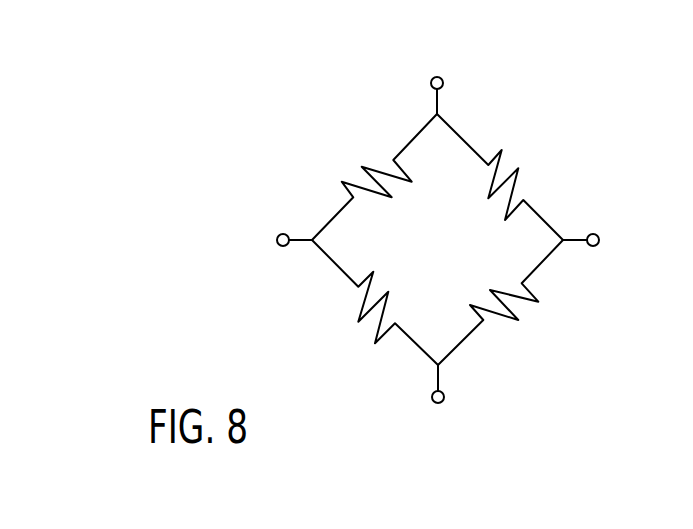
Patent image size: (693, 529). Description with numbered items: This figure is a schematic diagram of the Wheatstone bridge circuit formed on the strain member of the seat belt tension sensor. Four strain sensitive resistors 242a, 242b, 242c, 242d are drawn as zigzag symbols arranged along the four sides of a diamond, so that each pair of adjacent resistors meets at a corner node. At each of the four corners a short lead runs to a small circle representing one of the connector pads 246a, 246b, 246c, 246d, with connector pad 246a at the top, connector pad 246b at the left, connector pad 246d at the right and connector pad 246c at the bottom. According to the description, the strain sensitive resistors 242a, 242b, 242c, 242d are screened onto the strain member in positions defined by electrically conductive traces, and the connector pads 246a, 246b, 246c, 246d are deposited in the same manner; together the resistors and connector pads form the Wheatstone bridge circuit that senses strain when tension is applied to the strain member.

The strain sensitive resistor 242a is at (368, 177).
The strain sensitive resistor 242b is at (369, 302).
The strain sensitive resistor 242c is at (507, 177).
The strain sensitive resistor 242d is at (509, 302).
The connector pad 246a is at (437, 77).
The connector pad 246b is at (277, 240).
The connector pad 246c is at (438, 403).
The connector pad 246d is at (599, 240).